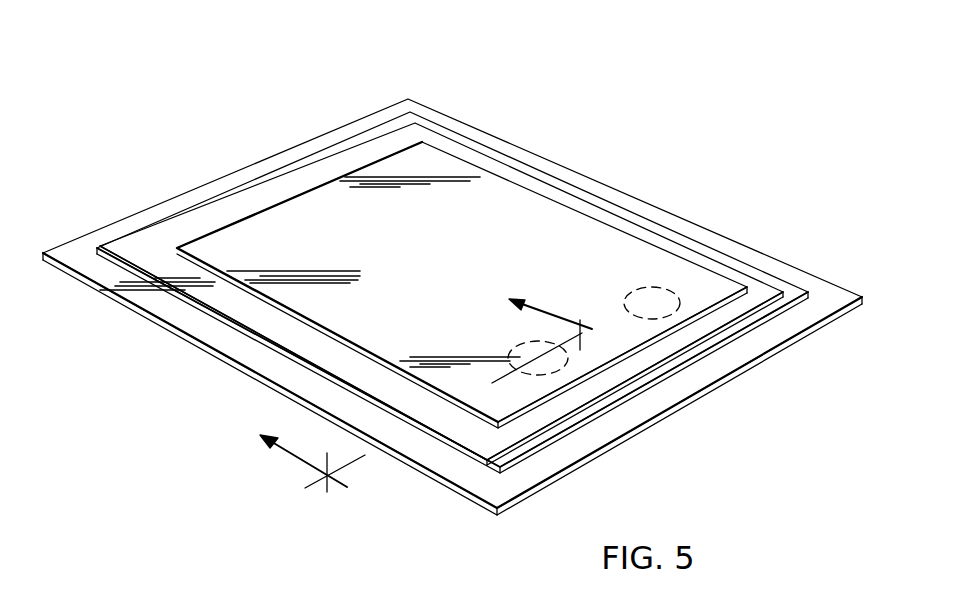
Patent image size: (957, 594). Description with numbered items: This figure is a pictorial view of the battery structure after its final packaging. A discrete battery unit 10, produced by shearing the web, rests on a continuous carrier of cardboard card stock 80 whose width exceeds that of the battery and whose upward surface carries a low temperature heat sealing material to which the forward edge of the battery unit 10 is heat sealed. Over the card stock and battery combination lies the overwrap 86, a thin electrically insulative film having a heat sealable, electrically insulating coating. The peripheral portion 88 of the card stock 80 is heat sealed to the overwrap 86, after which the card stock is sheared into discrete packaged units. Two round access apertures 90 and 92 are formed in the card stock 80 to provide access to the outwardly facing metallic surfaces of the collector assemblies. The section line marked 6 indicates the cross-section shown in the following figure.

The battery unit 10 is at (680, 259).
The card stock 80 is at (672, 410).
The overwrap 86 is at (558, 205).
The peripheral portion 88 is at (490, 137).
The access aperture 90 is at (532, 342).
The access aperture 92 is at (638, 281).
The section line 6- 6 is at (434, 399).